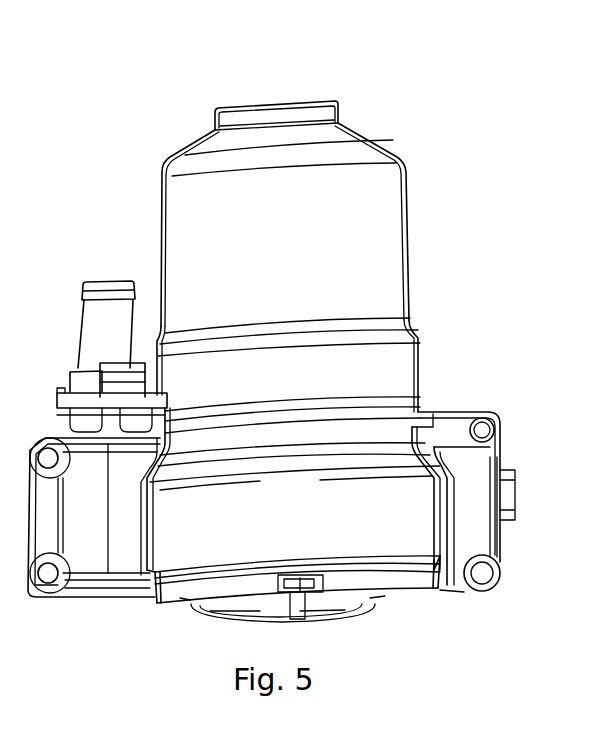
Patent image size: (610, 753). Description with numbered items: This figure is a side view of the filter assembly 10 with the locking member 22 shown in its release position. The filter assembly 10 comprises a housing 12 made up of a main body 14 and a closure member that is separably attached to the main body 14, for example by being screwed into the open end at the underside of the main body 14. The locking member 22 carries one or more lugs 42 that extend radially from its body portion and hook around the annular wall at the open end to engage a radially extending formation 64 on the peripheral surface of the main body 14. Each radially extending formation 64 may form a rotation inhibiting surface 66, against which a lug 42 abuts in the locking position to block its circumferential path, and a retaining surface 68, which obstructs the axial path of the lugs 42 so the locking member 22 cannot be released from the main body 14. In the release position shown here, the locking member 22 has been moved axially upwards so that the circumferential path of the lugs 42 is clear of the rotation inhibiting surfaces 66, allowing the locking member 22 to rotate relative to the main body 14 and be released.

The filter assembly 10 is at (420, 57).
The housing 12 is at (413, 236).
The main body 14 is at (409, 318).
The locking member 22 is at (422, 610).
The lugs 42 is at (290, 606).
The radially extending formation 64 is at (316, 583).
The rotation inhibiting surface 66 is at (318, 578).
The retaining surface 68 is at (312, 598).